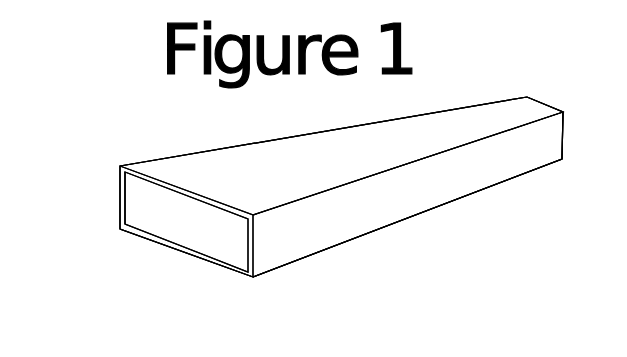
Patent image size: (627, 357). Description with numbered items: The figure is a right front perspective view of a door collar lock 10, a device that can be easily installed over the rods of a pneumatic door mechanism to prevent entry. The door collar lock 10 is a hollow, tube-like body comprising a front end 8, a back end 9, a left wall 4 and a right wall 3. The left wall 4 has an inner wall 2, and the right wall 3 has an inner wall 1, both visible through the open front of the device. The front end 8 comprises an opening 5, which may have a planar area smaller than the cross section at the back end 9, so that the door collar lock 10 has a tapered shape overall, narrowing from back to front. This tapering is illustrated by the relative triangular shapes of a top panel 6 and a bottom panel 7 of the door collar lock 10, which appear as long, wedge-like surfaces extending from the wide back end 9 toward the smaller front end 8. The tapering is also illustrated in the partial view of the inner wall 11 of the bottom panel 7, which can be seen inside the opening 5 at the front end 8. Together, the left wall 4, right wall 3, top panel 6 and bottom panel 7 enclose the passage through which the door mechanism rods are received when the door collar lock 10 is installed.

The inner wall 1 is at (228, 251).
The inner wall 2 is at (153, 208).
The right wall 3 is at (345, 225).
The left wall 4 is at (149, 140).
The opening 5 is at (130, 211).
The top panel 6 is at (293, 175).
The bottom panel 7 is at (395, 255).
The front end 8 is at (122, 259).
The back end 9 is at (588, 97).
The door collar lock 10 is at (523, 256).
The inner wall 11 is at (188, 237).